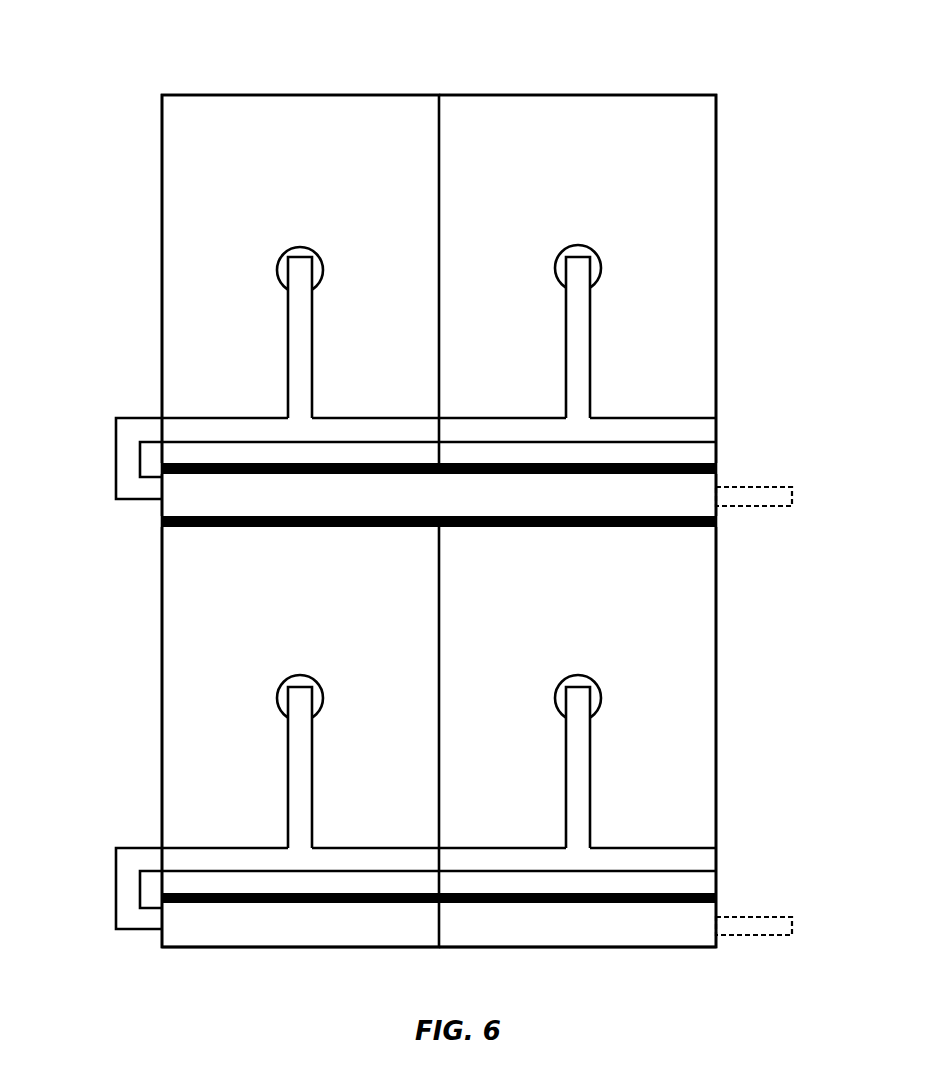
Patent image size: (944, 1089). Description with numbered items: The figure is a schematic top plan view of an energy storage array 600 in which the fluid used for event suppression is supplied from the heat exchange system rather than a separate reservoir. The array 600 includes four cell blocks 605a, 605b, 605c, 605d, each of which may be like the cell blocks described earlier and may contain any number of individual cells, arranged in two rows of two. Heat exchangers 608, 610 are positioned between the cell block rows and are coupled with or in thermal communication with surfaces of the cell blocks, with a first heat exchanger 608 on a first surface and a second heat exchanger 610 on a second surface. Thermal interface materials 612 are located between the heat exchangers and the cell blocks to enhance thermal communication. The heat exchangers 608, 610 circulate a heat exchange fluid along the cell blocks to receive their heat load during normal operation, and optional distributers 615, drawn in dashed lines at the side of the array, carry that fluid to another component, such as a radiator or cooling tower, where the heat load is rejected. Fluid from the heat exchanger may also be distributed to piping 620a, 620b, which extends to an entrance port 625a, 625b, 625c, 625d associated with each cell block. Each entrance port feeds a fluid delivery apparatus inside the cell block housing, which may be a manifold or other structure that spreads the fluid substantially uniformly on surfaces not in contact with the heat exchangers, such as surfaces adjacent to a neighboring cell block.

The energy storage array 600 is at (115, 96).
The cell block 605a is at (162, 250).
The cell block 605b is at (717, 250).
The cell block 605c is at (162, 700).
The cell block 605d is at (717, 700).
The heat exchanger 608 is at (185, 948).
The heat exchanger 610 is at (162, 508).
The thermal interface material 612 is at (705, 462).
The distributer 615 is at (792, 497).
The piping 620a is at (116, 430).
The piping 620b is at (116, 860).
The entrance port 625a is at (300, 247).
The entrance port 625b is at (580, 245).
The entrance port 625c is at (300, 675).
The entrance port 625d is at (582, 675).